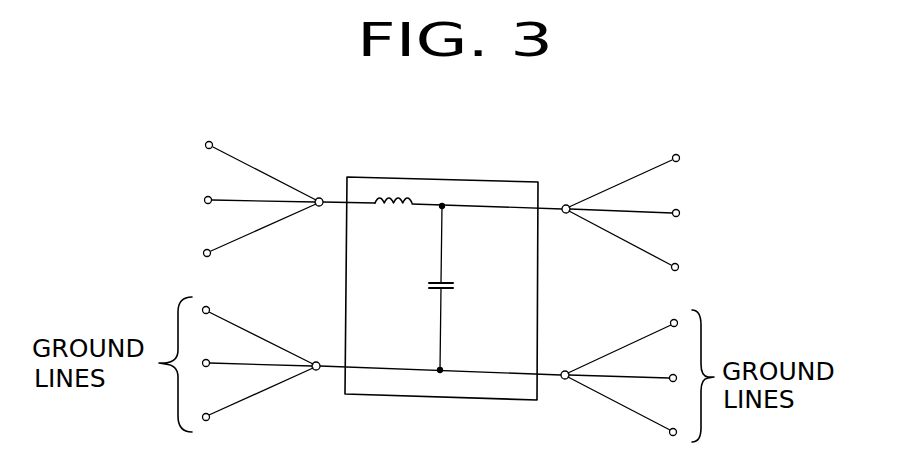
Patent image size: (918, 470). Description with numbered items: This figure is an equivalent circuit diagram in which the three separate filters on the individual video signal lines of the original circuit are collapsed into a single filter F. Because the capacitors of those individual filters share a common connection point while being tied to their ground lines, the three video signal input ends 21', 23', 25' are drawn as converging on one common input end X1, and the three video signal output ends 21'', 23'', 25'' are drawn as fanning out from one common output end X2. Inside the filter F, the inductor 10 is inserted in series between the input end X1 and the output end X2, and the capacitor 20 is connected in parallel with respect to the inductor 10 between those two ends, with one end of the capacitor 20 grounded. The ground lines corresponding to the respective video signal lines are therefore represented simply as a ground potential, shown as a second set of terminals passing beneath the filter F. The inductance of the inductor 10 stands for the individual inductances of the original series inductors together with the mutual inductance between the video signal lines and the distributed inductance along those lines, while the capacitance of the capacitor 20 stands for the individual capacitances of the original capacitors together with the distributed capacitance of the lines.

The inductor 10 is at (393, 220).
The capacitor 20 is at (459, 288).
The video signal input end 21' is at (239, 166).
The video signal input end 23' is at (238, 200).
The video signal input end 25' is at (238, 235).
The video signal output end 21'' is at (646, 177).
The video signal output end 23'' is at (646, 214).
The video signal output end 25'' is at (646, 245).
The input end X1 is at (319, 197).
The output end X2 is at (566, 204).
The filter F is at (446, 177).